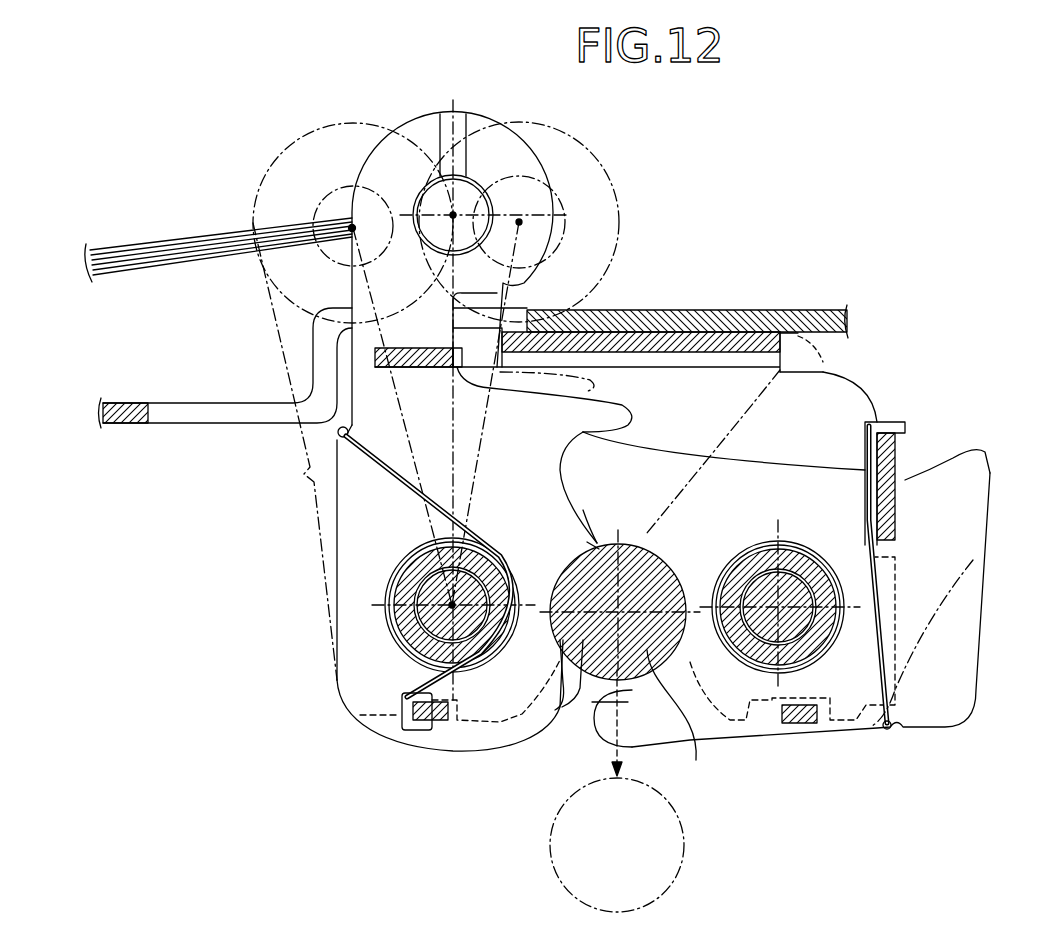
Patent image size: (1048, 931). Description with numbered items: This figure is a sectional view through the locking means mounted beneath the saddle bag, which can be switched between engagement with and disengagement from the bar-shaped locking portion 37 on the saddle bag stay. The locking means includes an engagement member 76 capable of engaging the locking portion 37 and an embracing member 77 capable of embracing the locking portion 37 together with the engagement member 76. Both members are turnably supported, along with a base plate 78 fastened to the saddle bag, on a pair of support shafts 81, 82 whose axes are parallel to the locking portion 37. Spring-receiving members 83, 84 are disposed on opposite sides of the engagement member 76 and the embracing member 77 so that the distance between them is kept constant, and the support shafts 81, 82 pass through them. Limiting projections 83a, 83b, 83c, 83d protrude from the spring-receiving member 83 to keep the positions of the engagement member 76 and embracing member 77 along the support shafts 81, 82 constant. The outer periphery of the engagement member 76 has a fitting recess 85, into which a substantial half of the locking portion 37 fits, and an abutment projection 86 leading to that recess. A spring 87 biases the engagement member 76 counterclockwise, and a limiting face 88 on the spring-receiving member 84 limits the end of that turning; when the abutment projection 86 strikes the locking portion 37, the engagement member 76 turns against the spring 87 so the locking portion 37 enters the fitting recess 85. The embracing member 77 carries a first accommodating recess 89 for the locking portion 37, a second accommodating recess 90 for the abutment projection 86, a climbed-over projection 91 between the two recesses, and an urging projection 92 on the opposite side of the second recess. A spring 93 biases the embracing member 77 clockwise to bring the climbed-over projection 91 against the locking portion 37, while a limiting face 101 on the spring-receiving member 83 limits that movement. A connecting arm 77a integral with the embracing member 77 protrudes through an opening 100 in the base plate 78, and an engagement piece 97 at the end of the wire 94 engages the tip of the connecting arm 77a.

The locking portion 37 is at (647, 580).
The engagement member 76 is at (957, 643).
The embracing member 77 is at (358, 572).
The connecting arm 77a is at (540, 207).
The base plate 78 is at (803, 311).
The support shaft 81 is at (758, 562).
The support shaft 82 is at (410, 655).
The spring-receiving member 83 is at (705, 311).
The limiting projection 83a is at (897, 457).
The limiting projection 83b is at (805, 725).
The limiting projection 83c is at (437, 722).
The limiting projection 83d is at (403, 348).
The spring-receiving member 84 is at (847, 403).
The fitting recess 85 is at (655, 721).
The abutment projection 86 is at (597, 540).
The spring 87 is at (957, 557).
The limiting face 88 is at (820, 360).
The first accommodating recess 89 is at (587, 683).
The second accommodating recess 90 is at (577, 450).
The climbed-over projection 91 is at (587, 542).
The urging projection 92 is at (633, 415).
The spring 93 is at (397, 480).
The wire 94 is at (162, 250).
The engagement piece 97 is at (470, 193).
The opening 100 is at (175, 423).
The limiting face 101 is at (500, 276).